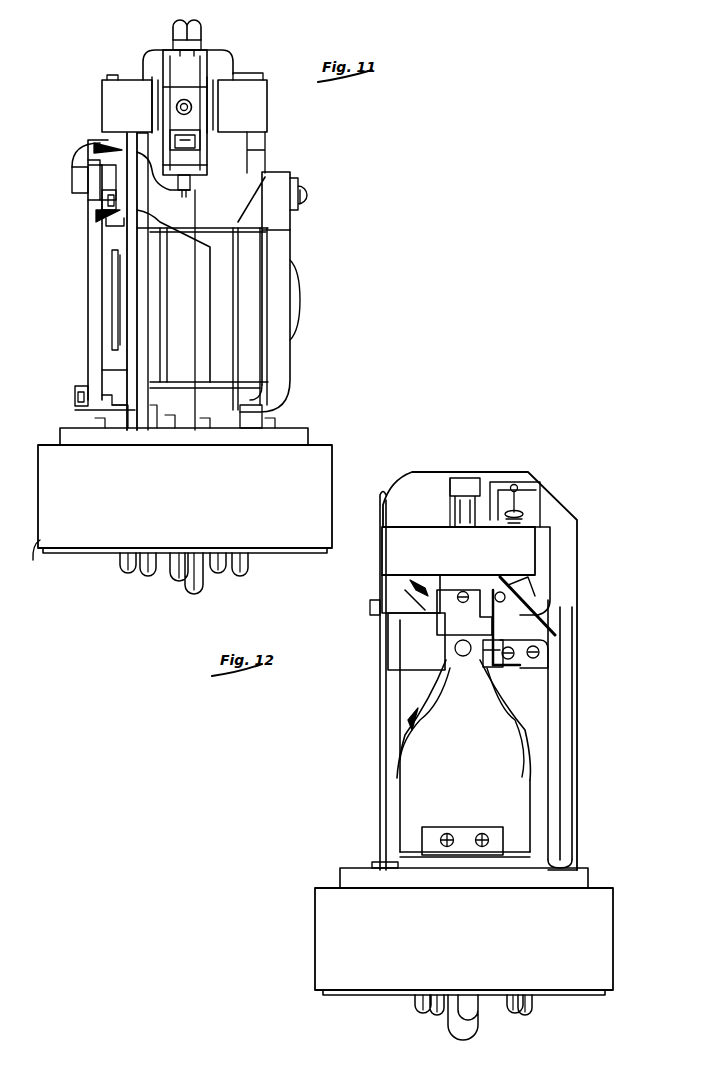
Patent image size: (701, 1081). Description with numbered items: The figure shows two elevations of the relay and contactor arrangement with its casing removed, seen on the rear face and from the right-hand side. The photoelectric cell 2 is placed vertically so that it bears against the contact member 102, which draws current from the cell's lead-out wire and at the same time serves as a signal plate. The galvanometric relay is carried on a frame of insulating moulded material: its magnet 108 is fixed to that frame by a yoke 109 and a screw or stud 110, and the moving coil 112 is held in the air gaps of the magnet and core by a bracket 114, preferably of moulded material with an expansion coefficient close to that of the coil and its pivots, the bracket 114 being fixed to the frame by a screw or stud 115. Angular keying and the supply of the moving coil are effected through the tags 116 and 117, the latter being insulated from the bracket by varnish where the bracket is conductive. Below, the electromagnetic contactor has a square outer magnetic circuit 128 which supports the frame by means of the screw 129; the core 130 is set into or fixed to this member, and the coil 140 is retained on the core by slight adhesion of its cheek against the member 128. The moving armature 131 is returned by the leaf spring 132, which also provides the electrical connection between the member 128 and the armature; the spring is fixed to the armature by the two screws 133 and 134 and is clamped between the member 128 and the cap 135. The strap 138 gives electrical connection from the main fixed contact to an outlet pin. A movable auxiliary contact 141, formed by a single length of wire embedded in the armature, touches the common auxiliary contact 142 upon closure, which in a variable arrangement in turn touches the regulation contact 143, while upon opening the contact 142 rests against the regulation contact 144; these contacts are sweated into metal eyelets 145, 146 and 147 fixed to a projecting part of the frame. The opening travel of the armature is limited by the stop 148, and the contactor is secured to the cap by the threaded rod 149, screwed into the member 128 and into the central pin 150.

In FIG. 12, the cell 2 is at (383, 728).
In FIG. 11, the contact member 102 is at (108, 76).
In FIG. 12, the contact member 102 is at (378, 596).
In FIG. 11, the magnet 108 is at (262, 103).
In FIG. 12, the magnet 108 is at (386, 566).
In FIG. 11, the yoke 109 is at (231, 62).
In FIG. 12, the yoke 109 is at (455, 505).
In FIG. 12, the screw or stud 110 is at (465, 478).
In FIG. 11, the moving coil 112 is at (158, 72).
In FIG. 12, the moving coil 112 is at (520, 520).
In FIG. 11, the bracket 114 is at (170, 52).
In FIG. 12, the bracket 114 is at (540, 505).
In FIG. 11, the screw or stud 115 is at (190, 110).
In FIG. 11, the tag 116 is at (190, 200).
In FIG. 12, the tag 116 is at (556, 630).
In FIG. 11, the tag 117 is at (197, 24).
In FIG. 12, the tag 117 is at (550, 478).
In FIG. 11, the outer magnetic circuit 128 is at (285, 362).
In FIG. 11, the screw 129 is at (298, 190).
In FIG. 11, the core 130 is at (115, 318).
In FIG. 11, the moving armature 131 is at (97, 345).
In FIG. 12, the moving armature 131 is at (405, 770).
In FIG. 11, the leaf spring 132 is at (84, 383).
In FIG. 12, the leaf spring 132 is at (422, 833).
In FIG. 12, the screw 133 is at (440, 845).
In FIG. 11, the screw 134 is at (76, 408).
In FIG. 12, the screw 134 is at (445, 832).
In FIG. 11, the cap 135 is at (179, 494).
In FIG. 12, the cap 135 is at (320, 897).
In FIG. 11, the strap 138 is at (142, 285).
In FIG. 12, the strap 138 is at (545, 720).
In FIG. 11, the coil 140 is at (230, 292).
In FIG. 12, the coil 140 is at (400, 740).
In FIG. 11, the movable auxiliary contact 141 is at (90, 202).
In FIG. 12, the movable auxiliary contact 141 is at (520, 640).
In FIG. 11, the common auxiliary contact 142 is at (98, 162).
In FIG. 12, the common auxiliary contact 142 is at (500, 622).
In FIG. 11, the regulation contact 143 is at (115, 220).
In FIG. 12, the regulation contact 143 is at (548, 705).
In FIG. 11, the regulation contact 144 is at (94, 218).
In FIG. 12, the regulation contact 144 is at (410, 718).
In FIG. 12, the metal eyelet 145 is at (440, 640).
In FIG. 12, the metal eyelet 146 is at (514, 655).
In FIG. 12, the metal eyelet 147 is at (540, 660).
In FIG. 11, the stop 148 is at (82, 150).
In FIG. 12, the stop 148 is at (445, 625).
In FIG. 12, the threaded rod 149 is at (463, 600).
In FIG. 11, the central pin 150 is at (172, 582).
In FIG. 12, the central pin 150 is at (452, 1018).